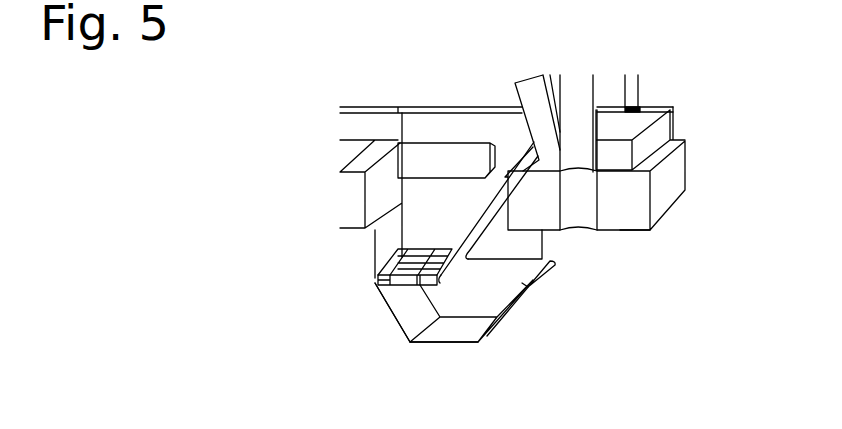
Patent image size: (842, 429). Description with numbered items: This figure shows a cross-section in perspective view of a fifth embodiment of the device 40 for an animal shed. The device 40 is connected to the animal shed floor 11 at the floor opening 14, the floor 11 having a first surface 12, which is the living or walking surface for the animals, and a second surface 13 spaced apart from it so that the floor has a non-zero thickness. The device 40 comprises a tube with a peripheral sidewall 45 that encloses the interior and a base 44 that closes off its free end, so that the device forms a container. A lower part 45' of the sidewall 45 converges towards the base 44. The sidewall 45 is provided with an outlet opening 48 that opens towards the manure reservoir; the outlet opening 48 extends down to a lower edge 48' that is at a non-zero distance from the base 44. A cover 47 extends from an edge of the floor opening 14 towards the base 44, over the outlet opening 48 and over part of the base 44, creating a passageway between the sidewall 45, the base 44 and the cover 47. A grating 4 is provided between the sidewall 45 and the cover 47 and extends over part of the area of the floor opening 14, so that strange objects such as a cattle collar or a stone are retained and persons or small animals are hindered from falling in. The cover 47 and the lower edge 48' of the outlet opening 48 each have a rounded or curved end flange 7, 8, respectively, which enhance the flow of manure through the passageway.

The grating 4 is at (375, 284).
The end flange 7 is at (443, 276).
The end flange 8 is at (529, 288).
The animal shed floor 11 is at (633, 194).
The first surface 12 is at (673, 131).
The second surface 13 is at (647, 231).
The floor opening 14 is at (431, 159).
The device 40 is at (362, 243).
The base 44 is at (445, 343).
The peripheral sidewall 45 is at (377, 273).
The lower part of the sidewall 45' is at (376, 324).
The cover 47 is at (483, 215).
The outlet opening 48 is at (542, 246).
The lower edge 48' is at (573, 292).